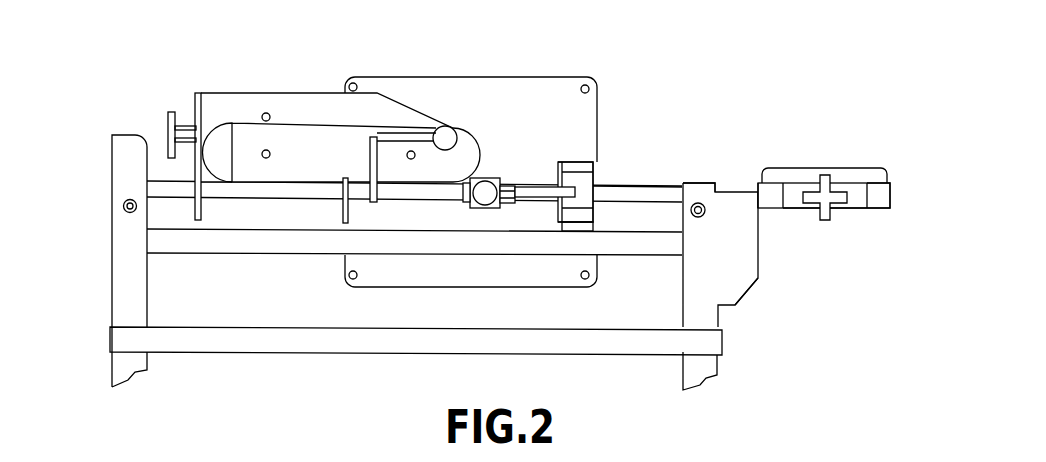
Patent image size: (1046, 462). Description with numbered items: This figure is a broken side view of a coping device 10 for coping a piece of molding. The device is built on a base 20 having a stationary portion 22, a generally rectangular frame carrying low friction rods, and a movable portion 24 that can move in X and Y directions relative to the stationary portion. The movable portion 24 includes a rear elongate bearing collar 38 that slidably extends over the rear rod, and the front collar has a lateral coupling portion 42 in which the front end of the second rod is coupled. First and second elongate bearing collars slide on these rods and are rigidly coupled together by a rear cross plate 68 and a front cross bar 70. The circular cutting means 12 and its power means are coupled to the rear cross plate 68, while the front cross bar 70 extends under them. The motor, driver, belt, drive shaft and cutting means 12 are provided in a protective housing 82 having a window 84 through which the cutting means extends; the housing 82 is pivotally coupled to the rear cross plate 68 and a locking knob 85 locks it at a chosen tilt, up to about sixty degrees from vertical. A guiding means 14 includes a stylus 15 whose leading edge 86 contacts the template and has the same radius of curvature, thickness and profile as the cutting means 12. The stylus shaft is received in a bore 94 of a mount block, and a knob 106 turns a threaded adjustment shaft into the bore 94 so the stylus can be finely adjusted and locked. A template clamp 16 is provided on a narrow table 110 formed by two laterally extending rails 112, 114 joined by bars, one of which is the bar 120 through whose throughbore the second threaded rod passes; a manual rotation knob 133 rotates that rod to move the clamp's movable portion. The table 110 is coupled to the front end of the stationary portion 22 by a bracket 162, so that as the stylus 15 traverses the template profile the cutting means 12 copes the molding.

The coping device 10 is at (122, 90).
The circular cutting means 12 is at (570, 215).
The guiding means 14 is at (472, 203).
The stylus 15 is at (594, 208).
The template clamp 16 is at (853, 170).
The base 20 is at (122, 147).
The stationary portion 22 is at (222, 247).
The movable portion 24 is at (292, 178).
The rear elongate bearing collar 38 is at (663, 186).
The lateral coupling portion 42 is at (700, 184).
The rear cross plate 68 is at (195, 212).
The front cross bar 70 is at (340, 210).
The protective housing 82 is at (482, 77).
The window 84 is at (590, 165).
The locking knob 85 is at (168, 112).
The leading edge 86 is at (597, 193).
The bore 94 is at (512, 205).
The knob 106 is at (485, 186).
The table 110 is at (758, 192).
The rail 112 is at (767, 200).
The rail 114 is at (887, 208).
The bar 120 is at (860, 208).
The manual rotation knob 133 is at (820, 217).
The bracket 162 is at (732, 302).